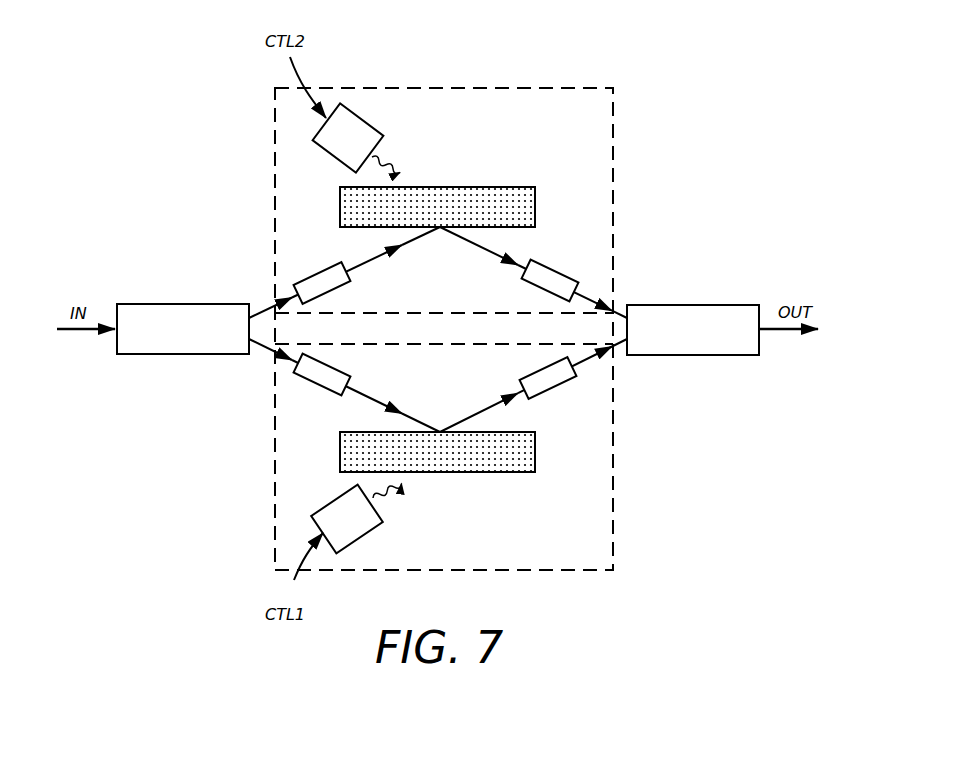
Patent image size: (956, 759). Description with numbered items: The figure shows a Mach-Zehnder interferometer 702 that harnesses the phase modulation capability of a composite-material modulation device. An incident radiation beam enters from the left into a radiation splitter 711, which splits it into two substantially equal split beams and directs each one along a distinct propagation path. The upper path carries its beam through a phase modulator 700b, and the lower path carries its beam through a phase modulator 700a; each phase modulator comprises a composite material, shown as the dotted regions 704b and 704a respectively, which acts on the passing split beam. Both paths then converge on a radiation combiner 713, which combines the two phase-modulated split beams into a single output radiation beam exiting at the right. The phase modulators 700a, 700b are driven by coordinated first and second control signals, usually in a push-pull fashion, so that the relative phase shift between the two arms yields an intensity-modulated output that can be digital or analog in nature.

The Mach-Zehnder interferometer 702 is at (120, 148).
The radiation splitter 711 is at (193, 304).
The radiation combiner 713 is at (715, 305).
The phase modulator 700a is at (438, 385).
The phase modulator 700b is at (438, 272).
The composite material 704a is at (537, 450).
The composite material 704b is at (537, 207).